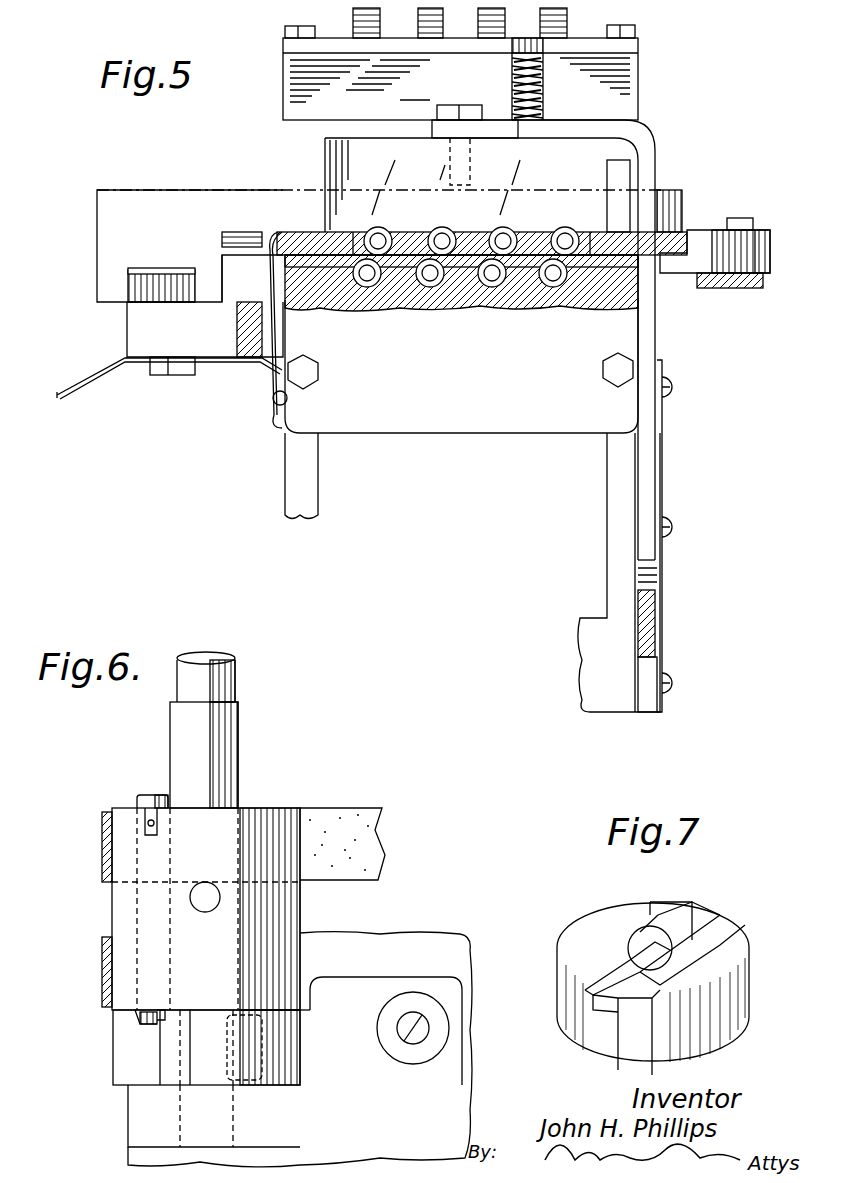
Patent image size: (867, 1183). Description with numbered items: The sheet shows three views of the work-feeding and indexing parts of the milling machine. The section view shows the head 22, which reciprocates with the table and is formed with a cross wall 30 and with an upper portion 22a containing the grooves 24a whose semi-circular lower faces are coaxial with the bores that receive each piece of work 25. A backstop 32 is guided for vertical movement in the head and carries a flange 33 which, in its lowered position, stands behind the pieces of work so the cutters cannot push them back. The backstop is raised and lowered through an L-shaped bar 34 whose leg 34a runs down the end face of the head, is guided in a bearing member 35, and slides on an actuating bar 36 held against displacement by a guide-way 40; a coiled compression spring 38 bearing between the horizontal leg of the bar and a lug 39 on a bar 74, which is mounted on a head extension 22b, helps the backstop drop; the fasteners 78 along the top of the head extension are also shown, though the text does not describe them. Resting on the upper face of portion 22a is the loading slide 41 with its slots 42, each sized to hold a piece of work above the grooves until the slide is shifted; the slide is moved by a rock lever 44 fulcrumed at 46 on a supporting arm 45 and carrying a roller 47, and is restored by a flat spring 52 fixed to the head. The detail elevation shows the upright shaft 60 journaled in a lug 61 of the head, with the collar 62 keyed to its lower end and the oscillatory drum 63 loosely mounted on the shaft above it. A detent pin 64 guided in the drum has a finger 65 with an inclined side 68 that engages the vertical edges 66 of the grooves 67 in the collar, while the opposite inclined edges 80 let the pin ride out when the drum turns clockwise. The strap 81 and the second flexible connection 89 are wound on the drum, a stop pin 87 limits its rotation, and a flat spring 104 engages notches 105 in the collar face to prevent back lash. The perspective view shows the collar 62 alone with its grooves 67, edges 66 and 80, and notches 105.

In FIG. 5, the head 22 is at (283, 467).
In FIG. 6, the head 22 is at (360, 1148).
In FIG. 5, the portion of the head 22a is at (632, 292).
In FIG. 5, the head extension 22b is at (643, 60).
In FIG. 5, the grooves 24a is at (377, 285).
In FIG. 5, the piece of work 25 is at (390, 230).
In FIG. 5, the cross wall 30 is at (410, 405).
In FIG. 5, the backstop 32 is at (412, 152).
In FIG. 5, the flange 33 is at (330, 290).
In FIG. 5, the L-shaped bar 34 is at (652, 163).
In FIG. 5, the leg 34a is at (650, 356).
In FIG. 5, the bearing member 35 is at (664, 460).
In FIG. 5, the actuating bar 36 is at (650, 620).
In FIG. 5, the coiled compression spring 38 is at (546, 74).
In FIG. 5, the lug 39 is at (511, 52).
In FIG. 5, the guide-way 40 is at (654, 648).
In FIG. 5, the loading slide 41 is at (688, 228).
In FIG. 5, the slots 42 is at (353, 232).
In FIG. 5, the rock lever 44 is at (772, 262).
In FIG. 5, the supporting arm 45 is at (765, 288).
In FIG. 5, the fulcrum 46 is at (752, 218).
In FIG. 5, the roller 47 is at (700, 228).
In FIG. 5, the flat spring 52 is at (268, 280).
In FIG. 5, the bar 74 is at (283, 46).
In FIG. 5, the bolts 78 is at (480, 14).
In FIG. 6, the upright shaft 60 is at (238, 765).
In FIG. 6, the lug 61 is at (138, 1108).
In FIG. 6, the collar 62 is at (112, 1050).
In FIG. 7, the collar 62 is at (750, 1010).
In FIG. 6, the oscillatory drum 63 is at (300, 905).
In FIG. 6, the detent pin 64 is at (145, 793).
In FIG. 6, the finger 65 is at (168, 1010).
In FIG. 7, the vertical edges 66 is at (692, 902).
In FIG. 6, the grooves 67 is at (147, 1026).
In FIG. 7, the grooves 67 is at (718, 915).
In FIG. 6, the inclined side 68 is at (145, 1010).
In FIG. 6, the inclined edges 80 is at (135, 1014).
In FIG. 7, the inclined edges 80 is at (740, 932).
In FIG. 6, the flexible connection 81 is at (100, 950).
In FIG. 6, the stop pin 87 is at (200, 912).
In FIG. 6, the second flexible connection 89 is at (100, 850).
In FIG. 6, the flat spring 104 is at (350, 1082).
In FIG. 7, the notches 105 is at (668, 902).